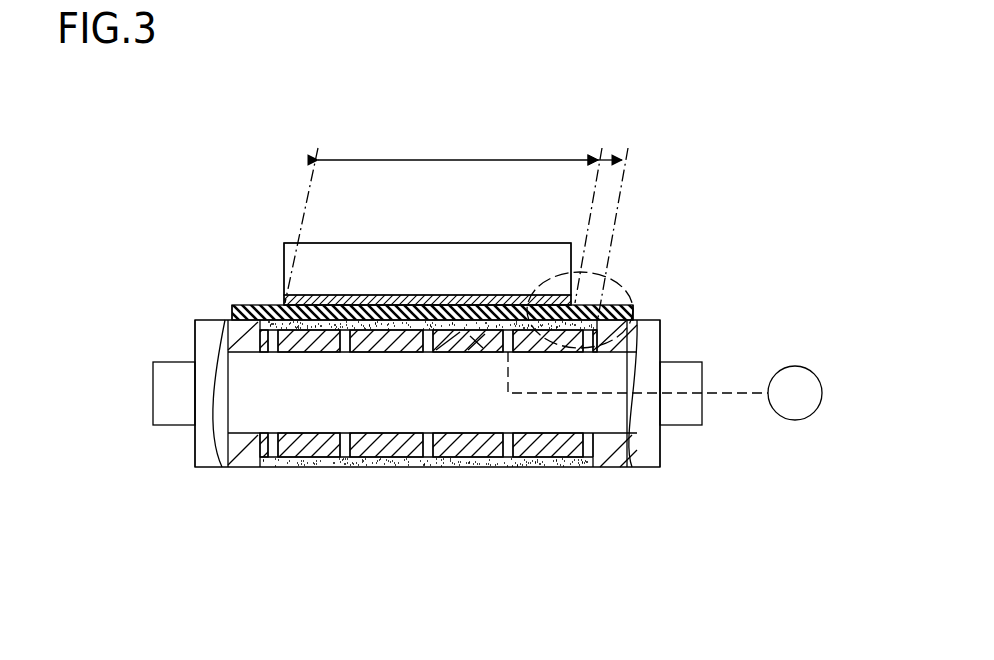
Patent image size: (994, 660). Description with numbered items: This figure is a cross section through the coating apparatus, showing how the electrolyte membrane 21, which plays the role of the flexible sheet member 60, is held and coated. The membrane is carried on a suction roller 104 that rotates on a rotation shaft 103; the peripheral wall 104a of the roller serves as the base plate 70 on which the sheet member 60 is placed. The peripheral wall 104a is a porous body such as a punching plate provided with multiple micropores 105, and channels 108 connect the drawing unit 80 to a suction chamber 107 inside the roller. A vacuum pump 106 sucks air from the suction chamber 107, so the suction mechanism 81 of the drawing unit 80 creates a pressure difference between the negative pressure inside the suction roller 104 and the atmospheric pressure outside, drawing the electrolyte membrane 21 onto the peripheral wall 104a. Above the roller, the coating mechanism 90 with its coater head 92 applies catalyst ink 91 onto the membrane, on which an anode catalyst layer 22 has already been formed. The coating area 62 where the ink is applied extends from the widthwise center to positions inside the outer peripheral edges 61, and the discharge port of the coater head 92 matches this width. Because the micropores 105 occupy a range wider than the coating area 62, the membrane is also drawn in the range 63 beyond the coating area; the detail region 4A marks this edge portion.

The electrolyte membrane 21 is at (392, 340).
The anode catalyst layer 22 is at (333, 332).
The sheet member 60 is at (236, 302).
The outer peripheral edges 61 is at (232, 310).
The coating area 62 is at (462, 158).
The range extending outward beyond the coating area 63 is at (612, 156).
The base plate 70 is at (303, 527).
The drawing unit 80 is at (440, 333).
The suction mechanism 81 is at (740, 387).
The coating mechanism 90 is at (282, 240).
The catalyst ink 91 is at (400, 300).
The coater head 92 is at (350, 250).
The rotation shaft 103 is at (172, 427).
The suction roller 104 is at (210, 468).
The peripheral wall 104a is at (305, 468).
The micropores 105 is at (285, 332).
The vacuum pump 106 is at (795, 412).
The suction chamber 107 is at (478, 342).
The channels 108 is at (427, 468).
The detail region shown in FIG. 4A is at (626, 290).